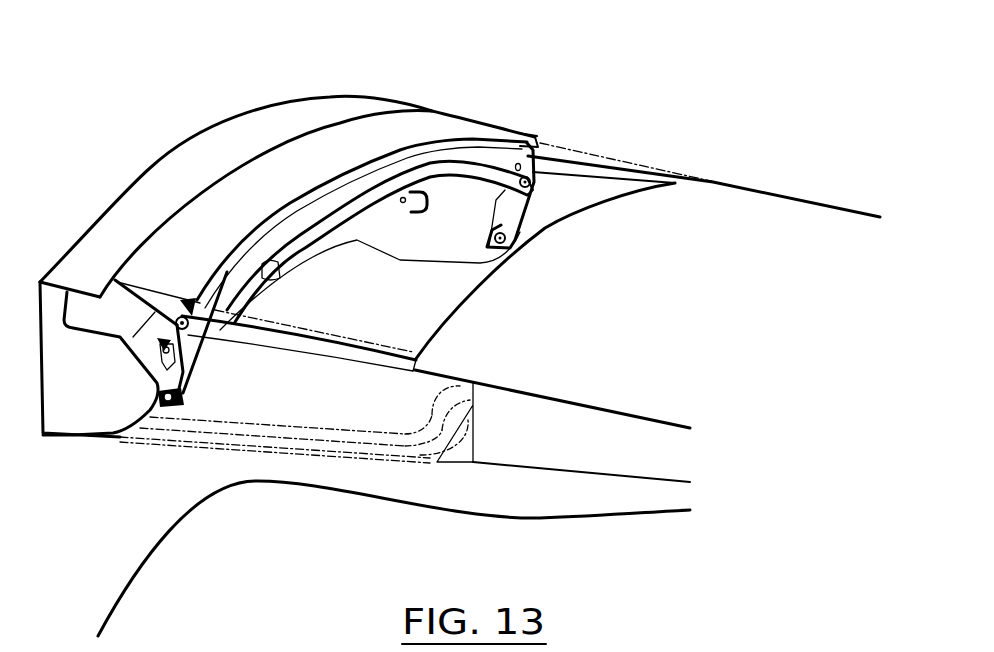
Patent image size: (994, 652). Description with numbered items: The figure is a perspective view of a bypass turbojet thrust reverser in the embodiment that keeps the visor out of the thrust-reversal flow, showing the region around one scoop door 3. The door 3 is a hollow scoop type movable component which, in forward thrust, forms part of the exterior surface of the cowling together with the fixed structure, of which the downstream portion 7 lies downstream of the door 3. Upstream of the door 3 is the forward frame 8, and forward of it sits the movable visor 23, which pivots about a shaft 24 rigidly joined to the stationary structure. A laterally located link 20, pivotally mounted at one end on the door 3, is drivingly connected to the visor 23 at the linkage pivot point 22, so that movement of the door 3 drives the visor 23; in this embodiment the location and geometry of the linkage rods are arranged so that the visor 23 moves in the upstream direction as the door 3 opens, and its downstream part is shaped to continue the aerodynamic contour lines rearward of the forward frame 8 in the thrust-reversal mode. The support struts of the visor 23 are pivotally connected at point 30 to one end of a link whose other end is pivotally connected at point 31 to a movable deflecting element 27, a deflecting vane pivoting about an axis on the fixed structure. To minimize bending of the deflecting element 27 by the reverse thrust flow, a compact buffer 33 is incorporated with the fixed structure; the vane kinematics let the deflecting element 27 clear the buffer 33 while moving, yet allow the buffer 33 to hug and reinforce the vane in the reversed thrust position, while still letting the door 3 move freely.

The scoop door 3 is at (640, 162).
The downstream portion 7 is at (417, 303).
The forward frame 8 is at (107, 237).
The link 20 is at (285, 343).
The linkage pivot point 22 is at (185, 325).
The visor 23 is at (392, 125).
The shaft 24 is at (168, 405).
The deflecting element 27 is at (488, 180).
The pivot point 30 is at (160, 348).
The pivot point 31 is at (533, 178).
The buffer 33 is at (400, 197).